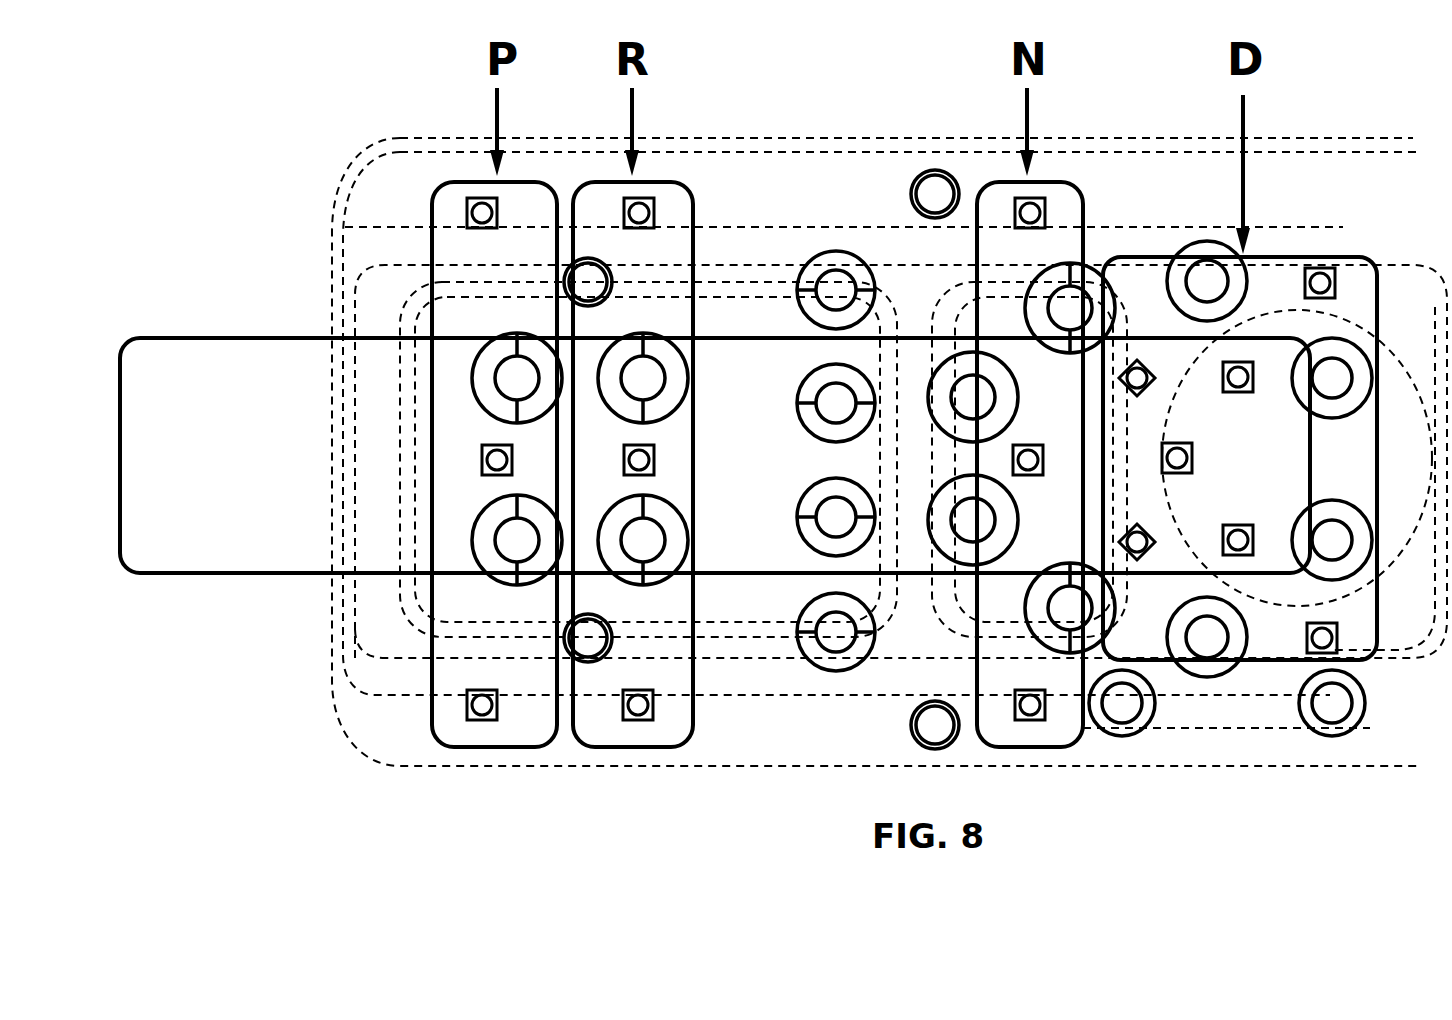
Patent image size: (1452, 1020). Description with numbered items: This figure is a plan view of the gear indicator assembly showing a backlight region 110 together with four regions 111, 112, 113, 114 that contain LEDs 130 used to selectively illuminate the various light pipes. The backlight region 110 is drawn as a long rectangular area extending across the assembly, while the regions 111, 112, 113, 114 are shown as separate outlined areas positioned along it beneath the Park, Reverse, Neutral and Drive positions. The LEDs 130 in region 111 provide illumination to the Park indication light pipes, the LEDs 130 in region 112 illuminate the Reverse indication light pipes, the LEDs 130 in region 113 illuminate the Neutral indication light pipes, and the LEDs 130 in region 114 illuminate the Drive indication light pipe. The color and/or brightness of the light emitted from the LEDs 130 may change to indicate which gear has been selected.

The backlight region 110 is at (197, 338).
The LEDs 130 is at (475, 205).
The region 111 is at (461, 182).
The region 112 is at (665, 182).
The region 113 is at (990, 182).
The region 114 is at (1343, 257).